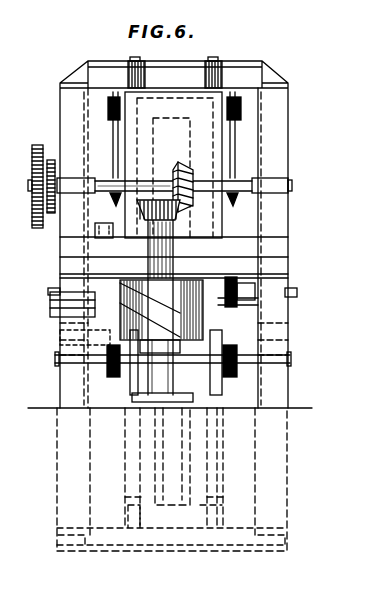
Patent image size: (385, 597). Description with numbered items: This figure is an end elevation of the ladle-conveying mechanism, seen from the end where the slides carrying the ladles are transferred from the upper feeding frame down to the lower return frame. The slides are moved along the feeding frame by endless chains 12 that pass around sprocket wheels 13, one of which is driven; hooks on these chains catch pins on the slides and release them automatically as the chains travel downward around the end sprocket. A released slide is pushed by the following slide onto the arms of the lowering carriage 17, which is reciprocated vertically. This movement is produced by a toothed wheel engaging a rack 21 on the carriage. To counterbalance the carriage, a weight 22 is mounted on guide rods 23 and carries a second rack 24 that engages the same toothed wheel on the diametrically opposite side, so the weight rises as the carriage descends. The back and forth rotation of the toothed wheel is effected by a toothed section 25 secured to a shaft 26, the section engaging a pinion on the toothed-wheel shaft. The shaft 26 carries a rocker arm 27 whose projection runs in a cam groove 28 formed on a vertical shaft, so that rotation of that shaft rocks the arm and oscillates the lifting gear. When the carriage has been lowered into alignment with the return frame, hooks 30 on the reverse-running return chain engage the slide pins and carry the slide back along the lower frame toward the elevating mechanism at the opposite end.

The endless chains 12 is at (238, 125).
The sprocket wheels 13 is at (240, 108).
The lowering carriage 17 is at (195, 450).
The rack 21 is at (178, 478).
The weight 22 is at (198, 146).
The guide rods 23 is at (133, 383).
The rack 24 is at (105, 133).
The toothed section 25 is at (98, 230).
The shaft 26 is at (48, 312).
The rocker arm 27 is at (120, 290).
The cam groove 28 is at (208, 292).
The hooks 30 is at (108, 330).